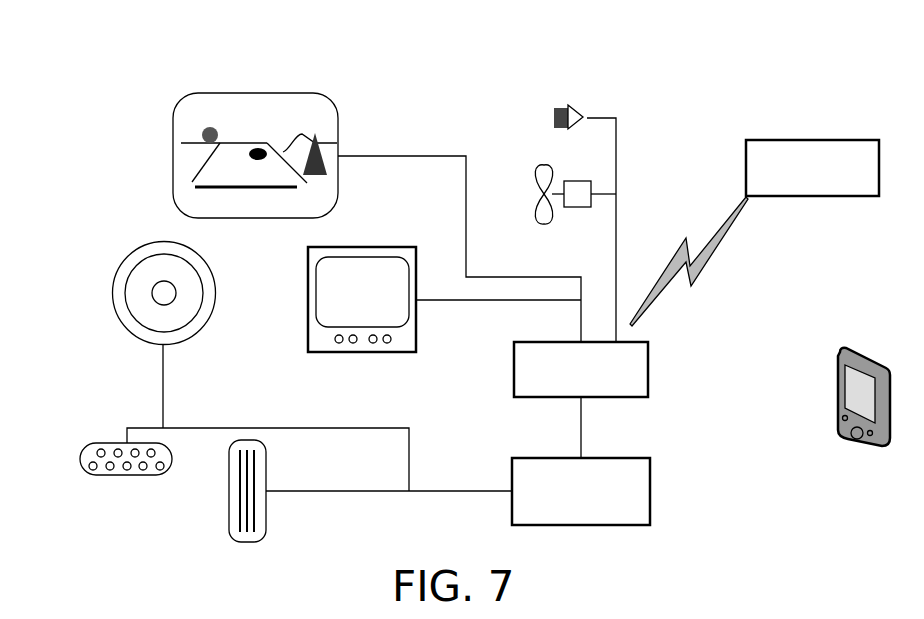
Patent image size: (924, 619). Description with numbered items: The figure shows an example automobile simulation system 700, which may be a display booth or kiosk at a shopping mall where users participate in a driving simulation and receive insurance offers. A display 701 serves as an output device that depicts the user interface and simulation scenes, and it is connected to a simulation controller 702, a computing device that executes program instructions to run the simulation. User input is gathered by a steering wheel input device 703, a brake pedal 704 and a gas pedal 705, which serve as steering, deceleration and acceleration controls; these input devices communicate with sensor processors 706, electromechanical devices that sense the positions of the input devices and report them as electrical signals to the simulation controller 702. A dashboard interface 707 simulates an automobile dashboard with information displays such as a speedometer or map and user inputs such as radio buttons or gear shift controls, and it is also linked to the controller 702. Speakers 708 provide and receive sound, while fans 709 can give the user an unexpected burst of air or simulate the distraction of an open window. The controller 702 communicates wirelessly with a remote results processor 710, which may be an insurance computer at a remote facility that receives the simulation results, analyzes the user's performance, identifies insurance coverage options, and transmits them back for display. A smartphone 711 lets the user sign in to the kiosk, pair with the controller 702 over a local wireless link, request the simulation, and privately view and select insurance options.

The automobile simulation system 700 is at (371, 252).
The display 701 is at (211, 155).
The simulation controller computing device 702 is at (630, 369).
The steering wheel input device 703 is at (126, 283).
The brake pedal 704 is at (95, 447).
The gas pedal 705 is at (191, 491).
The sensor processors 706 is at (621, 491).
The dashboard interface 707 is at (329, 315).
The speakers 708 is at (536, 101).
The fans 709 is at (506, 170).
The remote results processor 710 is at (754, 218).
The smartphone 711 is at (841, 375).